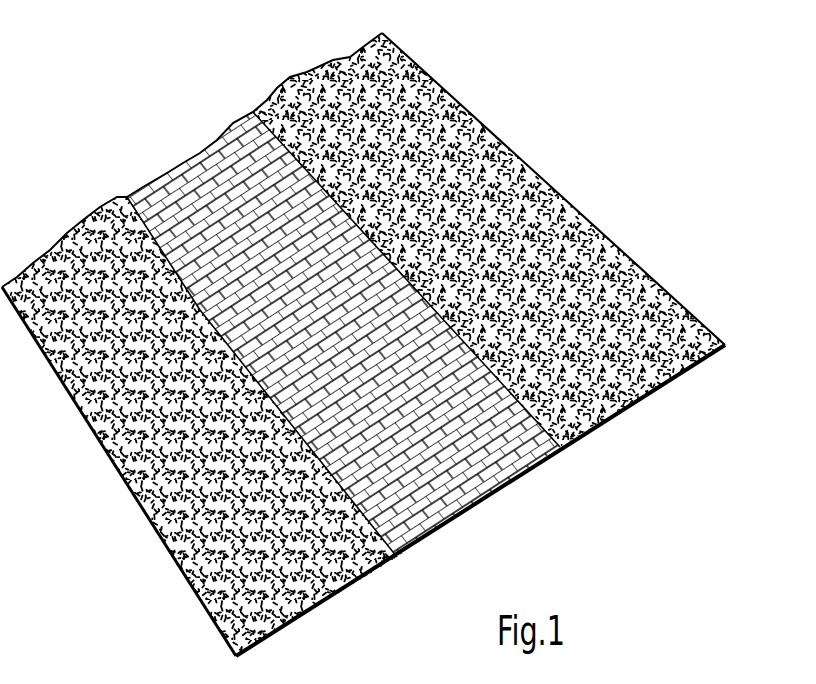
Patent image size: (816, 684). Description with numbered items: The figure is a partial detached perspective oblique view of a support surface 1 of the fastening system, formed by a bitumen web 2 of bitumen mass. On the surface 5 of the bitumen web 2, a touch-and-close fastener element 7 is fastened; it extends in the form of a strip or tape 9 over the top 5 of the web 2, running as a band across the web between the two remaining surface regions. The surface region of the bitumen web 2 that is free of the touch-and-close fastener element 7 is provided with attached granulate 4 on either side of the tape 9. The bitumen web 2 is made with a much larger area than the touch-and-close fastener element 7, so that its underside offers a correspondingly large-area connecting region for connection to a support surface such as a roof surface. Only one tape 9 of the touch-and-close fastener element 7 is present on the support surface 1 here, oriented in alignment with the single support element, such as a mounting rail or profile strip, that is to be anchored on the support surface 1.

The support surface 1 is at (618, 153).
The bitumen web 2 is at (133, 494).
The granulate 4 is at (438, 157).
The surface 5 is at (110, 419).
The touch-and-close fastener element 7 is at (476, 440).
The tape 9 is at (441, 524).